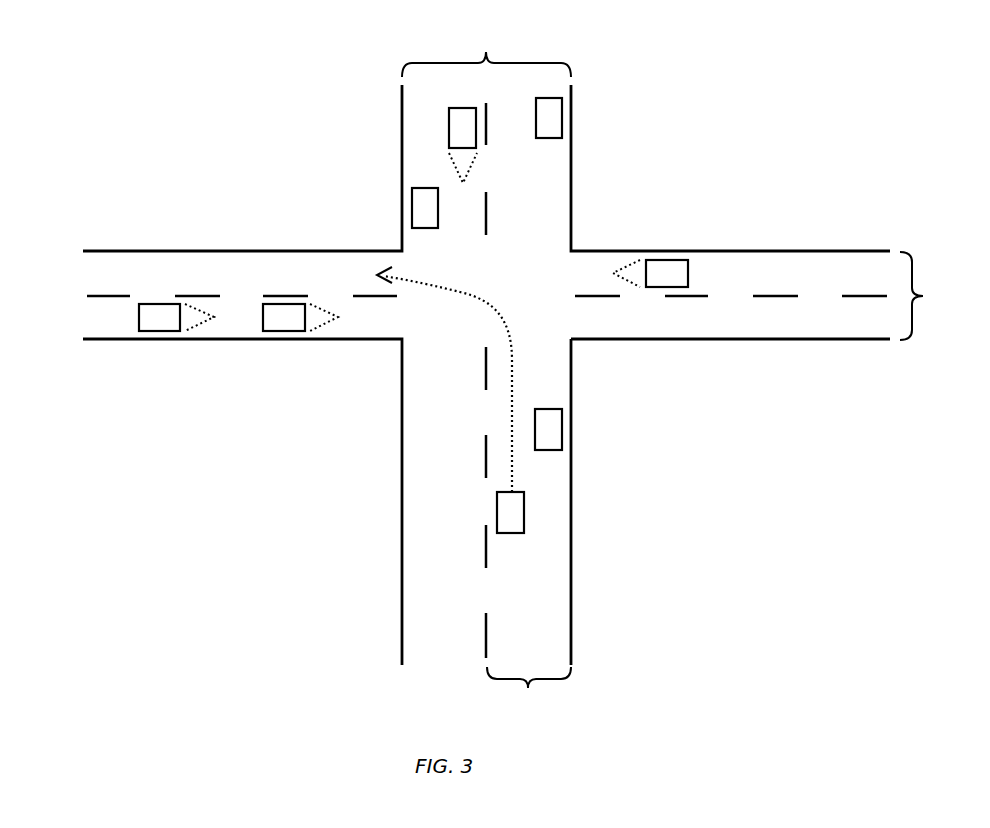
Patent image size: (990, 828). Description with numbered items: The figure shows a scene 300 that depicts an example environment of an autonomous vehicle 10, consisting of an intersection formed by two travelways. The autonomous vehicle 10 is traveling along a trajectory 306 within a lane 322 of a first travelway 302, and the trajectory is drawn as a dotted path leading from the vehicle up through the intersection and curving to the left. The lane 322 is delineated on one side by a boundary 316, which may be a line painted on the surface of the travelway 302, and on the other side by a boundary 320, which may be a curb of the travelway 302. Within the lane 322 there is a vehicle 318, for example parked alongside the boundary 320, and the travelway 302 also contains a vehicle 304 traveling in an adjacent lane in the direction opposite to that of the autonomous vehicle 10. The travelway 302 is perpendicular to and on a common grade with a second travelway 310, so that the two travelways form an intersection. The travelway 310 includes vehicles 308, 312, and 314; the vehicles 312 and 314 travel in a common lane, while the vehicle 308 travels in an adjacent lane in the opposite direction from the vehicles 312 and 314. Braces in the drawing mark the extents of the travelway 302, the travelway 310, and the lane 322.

The scene 300 is at (126, 84).
The travelway 302 is at (486, 53).
The vehicle 304 is at (449, 137).
The trajectory 306 is at (486, 308).
The vehicle 308 is at (677, 260).
The travelway 310 is at (770, 296).
The vehicle 312 is at (152, 331).
The vehicle 314 is at (277, 331).
The boundary 316 is at (485, 457).
The vehicle 318 is at (562, 422).
The boundary 320 is at (571, 485).
The lane 322 is at (529, 693).
The autonomous vehicle 10 is at (524, 518).